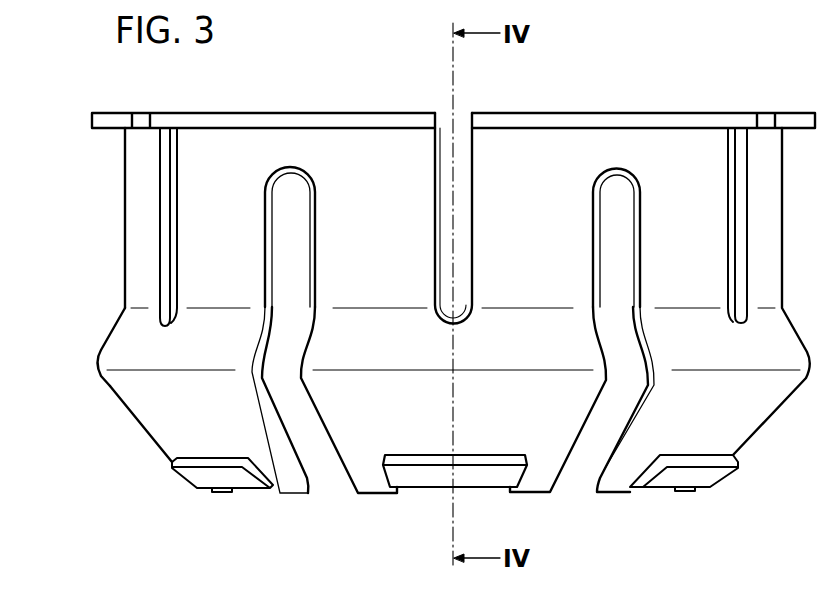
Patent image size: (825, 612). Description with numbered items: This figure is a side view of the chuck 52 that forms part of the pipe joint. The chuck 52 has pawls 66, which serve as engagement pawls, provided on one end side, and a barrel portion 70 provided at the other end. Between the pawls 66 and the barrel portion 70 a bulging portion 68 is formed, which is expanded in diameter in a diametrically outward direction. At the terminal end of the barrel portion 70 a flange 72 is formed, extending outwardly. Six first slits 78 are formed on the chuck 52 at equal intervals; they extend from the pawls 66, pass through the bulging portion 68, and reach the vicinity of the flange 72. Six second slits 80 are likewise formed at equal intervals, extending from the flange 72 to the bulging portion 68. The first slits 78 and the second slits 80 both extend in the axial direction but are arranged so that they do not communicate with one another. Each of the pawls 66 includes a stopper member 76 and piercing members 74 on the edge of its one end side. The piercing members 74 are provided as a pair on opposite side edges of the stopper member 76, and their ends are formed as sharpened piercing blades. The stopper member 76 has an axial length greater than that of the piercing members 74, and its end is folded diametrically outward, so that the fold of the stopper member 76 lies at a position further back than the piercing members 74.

The chuck 52 is at (718, 52).
The pawls 66 is at (152, 417).
The bulging portion 68 is at (133, 343).
The barrel portion 70 is at (143, 222).
The flange 72 is at (108, 117).
The piercing members 74 is at (309, 482).
The stopper member 76 is at (248, 493).
The first slits 78 is at (615, 410).
The second slits 80 is at (463, 124).